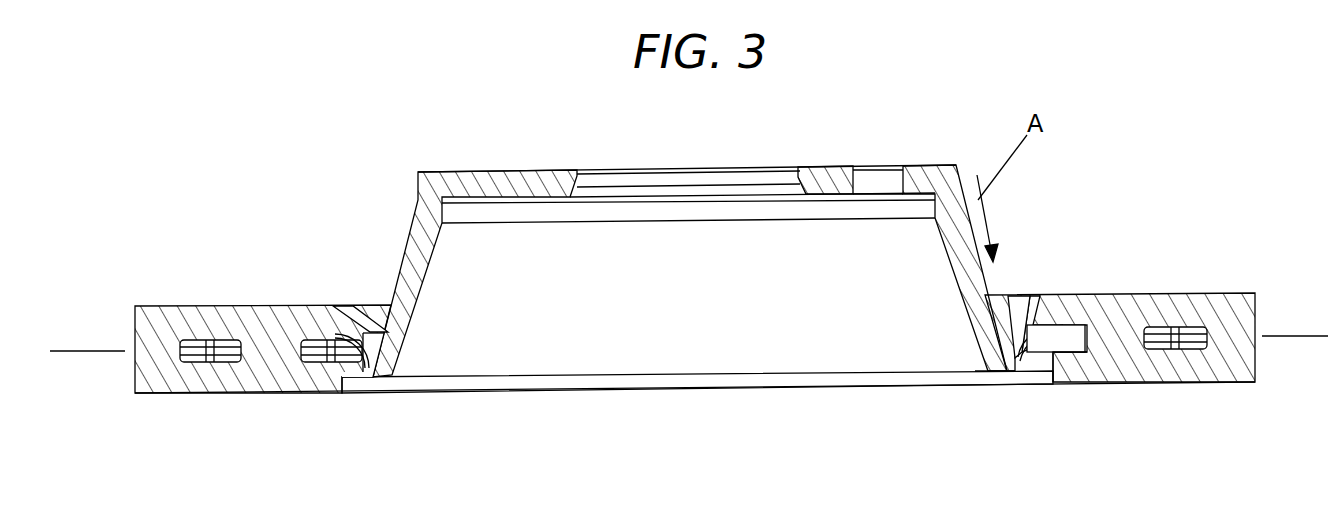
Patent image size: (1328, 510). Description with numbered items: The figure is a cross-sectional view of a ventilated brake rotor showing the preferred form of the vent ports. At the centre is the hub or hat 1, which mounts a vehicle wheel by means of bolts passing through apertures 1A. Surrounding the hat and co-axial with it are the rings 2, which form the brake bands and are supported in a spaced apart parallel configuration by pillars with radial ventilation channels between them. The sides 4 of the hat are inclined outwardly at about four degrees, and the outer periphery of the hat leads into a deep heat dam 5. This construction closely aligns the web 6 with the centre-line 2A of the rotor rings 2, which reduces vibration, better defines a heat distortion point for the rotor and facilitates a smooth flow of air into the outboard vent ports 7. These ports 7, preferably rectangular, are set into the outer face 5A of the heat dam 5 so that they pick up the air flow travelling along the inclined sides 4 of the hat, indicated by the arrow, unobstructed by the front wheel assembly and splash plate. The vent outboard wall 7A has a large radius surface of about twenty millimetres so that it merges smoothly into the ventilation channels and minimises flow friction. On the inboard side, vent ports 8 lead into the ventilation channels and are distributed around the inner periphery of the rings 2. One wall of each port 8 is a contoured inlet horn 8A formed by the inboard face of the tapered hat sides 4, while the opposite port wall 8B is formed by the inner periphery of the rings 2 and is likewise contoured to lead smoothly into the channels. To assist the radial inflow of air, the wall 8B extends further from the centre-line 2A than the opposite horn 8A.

The hat 1 is at (825, 167).
The apertures 1A is at (880, 167).
The rings 2 is at (1237, 308).
The centre-line 2A is at (78, 350).
The sides 4 is at (410, 233).
The heat dam 5 is at (1017, 293).
The outer face 5A is at (347, 310).
The web 6 is at (983, 323).
The outboard vent ports 7 is at (375, 318).
The vent outboard wall 7A is at (1075, 293).
The vent ports 8 is at (1033, 365).
The inlet horn 8A is at (990, 373).
The port walls 8B is at (1070, 360).